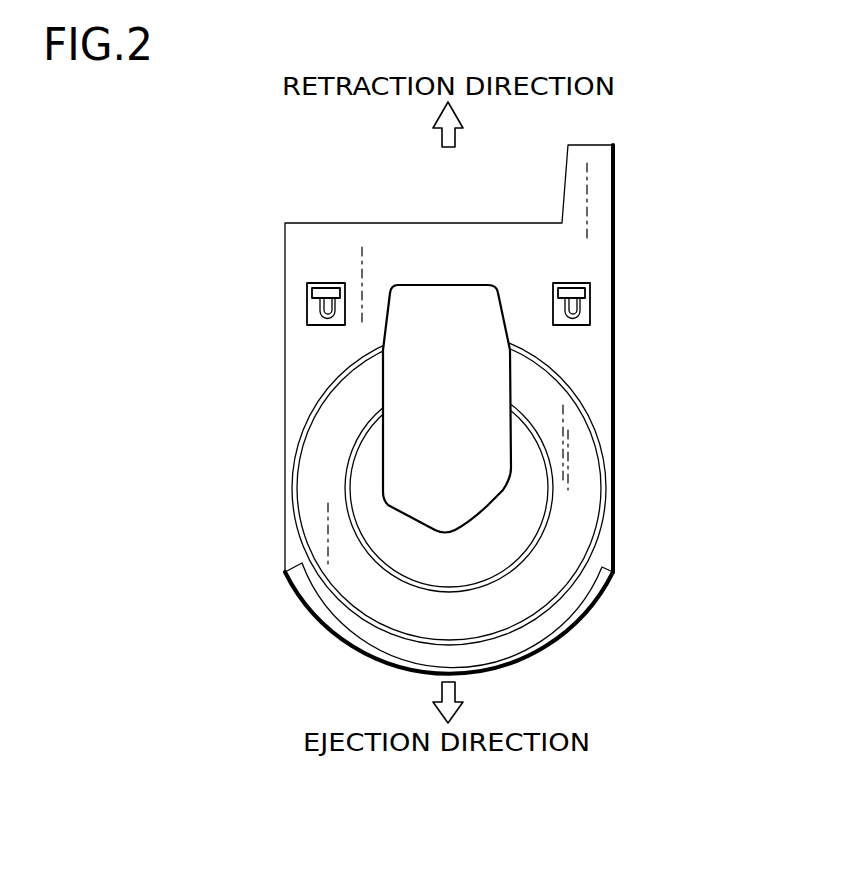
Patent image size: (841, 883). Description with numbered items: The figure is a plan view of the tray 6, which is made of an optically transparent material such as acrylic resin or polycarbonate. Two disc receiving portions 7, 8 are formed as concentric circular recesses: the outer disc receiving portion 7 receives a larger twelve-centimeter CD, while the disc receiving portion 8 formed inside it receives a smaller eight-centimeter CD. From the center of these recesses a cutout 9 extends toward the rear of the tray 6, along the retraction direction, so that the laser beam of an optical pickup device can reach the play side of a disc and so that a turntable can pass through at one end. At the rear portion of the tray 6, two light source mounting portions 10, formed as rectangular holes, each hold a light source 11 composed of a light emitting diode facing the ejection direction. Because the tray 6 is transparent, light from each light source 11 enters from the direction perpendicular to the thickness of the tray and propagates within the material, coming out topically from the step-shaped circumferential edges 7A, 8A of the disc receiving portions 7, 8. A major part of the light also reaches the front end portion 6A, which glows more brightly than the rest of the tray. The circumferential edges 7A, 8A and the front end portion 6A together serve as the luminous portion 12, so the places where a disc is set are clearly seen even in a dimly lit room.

The tray 6 is at (232, 524).
The front end portion 6A is at (513, 658).
The disc receiving portion 7 is at (583, 485).
The circumferential edge 7A is at (333, 387).
The disc receiving portion 8 is at (512, 540).
The circumferential edge 8A is at (366, 425).
The cutout 9 is at (450, 303).
The light source mounting portion 10 is at (307, 293).
The light source 11 is at (320, 310).
The luminous portion 12 is at (481, 520).